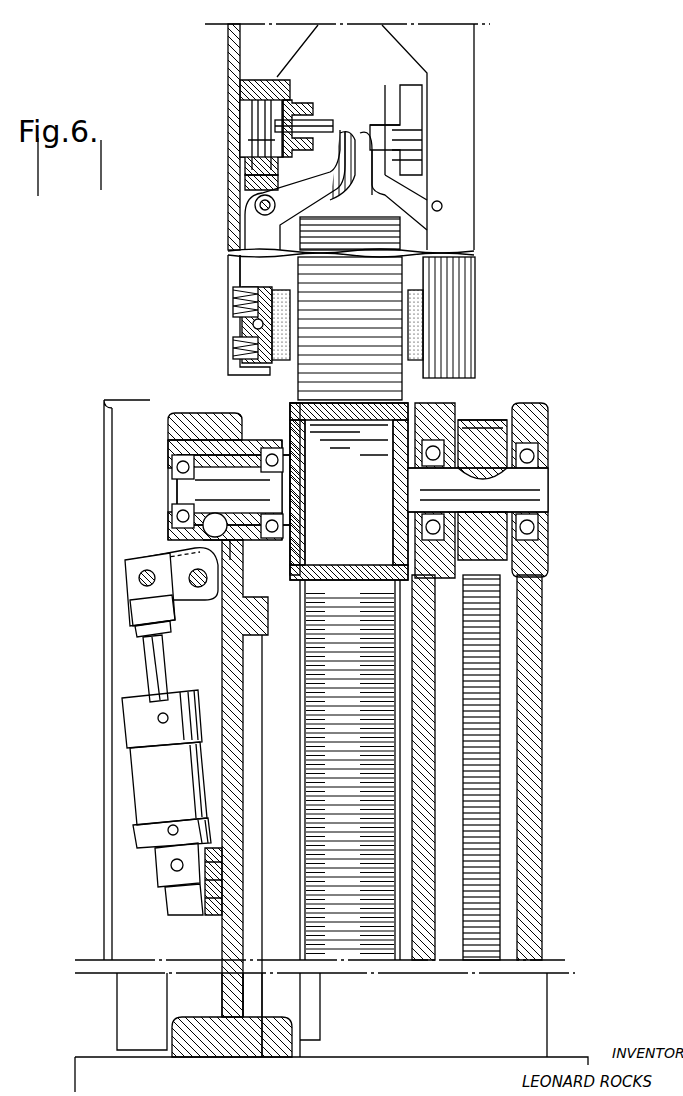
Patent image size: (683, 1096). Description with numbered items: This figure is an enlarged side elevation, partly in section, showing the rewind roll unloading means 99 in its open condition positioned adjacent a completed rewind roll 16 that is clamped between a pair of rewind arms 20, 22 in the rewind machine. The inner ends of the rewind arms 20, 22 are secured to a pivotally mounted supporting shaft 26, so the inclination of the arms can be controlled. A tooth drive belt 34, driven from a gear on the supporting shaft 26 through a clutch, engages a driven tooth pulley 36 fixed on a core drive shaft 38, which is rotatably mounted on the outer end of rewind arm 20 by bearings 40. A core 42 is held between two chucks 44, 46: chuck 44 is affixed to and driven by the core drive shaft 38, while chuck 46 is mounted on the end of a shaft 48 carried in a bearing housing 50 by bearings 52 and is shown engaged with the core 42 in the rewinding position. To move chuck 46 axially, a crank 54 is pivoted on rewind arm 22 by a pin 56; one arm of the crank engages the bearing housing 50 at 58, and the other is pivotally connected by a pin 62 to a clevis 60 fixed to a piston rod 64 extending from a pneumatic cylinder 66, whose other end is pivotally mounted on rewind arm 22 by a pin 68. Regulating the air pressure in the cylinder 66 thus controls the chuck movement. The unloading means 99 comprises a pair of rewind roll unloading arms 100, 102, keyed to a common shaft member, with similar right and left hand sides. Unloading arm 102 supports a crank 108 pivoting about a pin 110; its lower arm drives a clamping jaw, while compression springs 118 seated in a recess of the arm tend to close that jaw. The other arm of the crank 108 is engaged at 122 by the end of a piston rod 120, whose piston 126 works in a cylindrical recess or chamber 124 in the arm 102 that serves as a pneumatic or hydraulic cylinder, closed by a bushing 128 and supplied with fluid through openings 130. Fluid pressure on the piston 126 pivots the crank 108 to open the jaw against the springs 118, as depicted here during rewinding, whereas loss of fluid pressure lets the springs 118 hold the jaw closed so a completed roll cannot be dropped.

The rewind roll 16 is at (310, 765).
The rewind arm 20 is at (530, 633).
The rewind arm 22 is at (228, 946).
The supporting shaft 26 is at (370, 1093).
The tooth drive belt 34 is at (495, 745).
The driven tooth pulley 36 is at (490, 435).
The core drive shaft 38 is at (532, 485).
The bearings 40 is at (445, 432).
The core 42 is at (388, 425).
The chuck 44 is at (400, 448).
The chuck 46 is at (296, 420).
The shaft 48 is at (233, 485).
The bearing housing 50 is at (180, 440).
The bearings 52 is at (176, 467).
The crank 54 is at (200, 556).
The pin 56 is at (199, 588).
The engagement point 58 is at (205, 532).
The clevis 60 is at (140, 615).
The pin 62 is at (139, 578).
The piston rod 64 is at (150, 672).
The pneumatic cylinder 66 is at (145, 770).
The pin 68 is at (170, 868).
The rewind roll unloading means 99 is at (503, 148).
The rewind roll unloading arm 100 is at (465, 88).
The rewind roll unloading arm 102 is at (235, 180).
The crank 108 is at (492, 180).
The pin 110 is at (258, 210).
The compression springs 118 is at (238, 348).
The piston rod 120 is at (322, 124).
The engagement point 122 is at (347, 135).
The cylindrical recess or chamber 124 is at (245, 100).
The piston 126 is at (258, 138).
The bushing 128 is at (290, 90).
The openings 130 is at (250, 195).